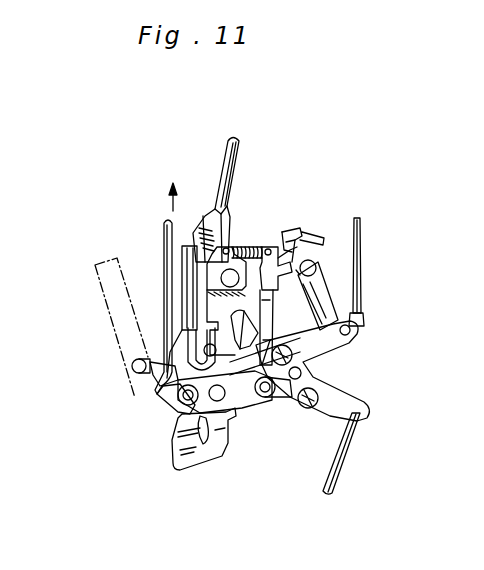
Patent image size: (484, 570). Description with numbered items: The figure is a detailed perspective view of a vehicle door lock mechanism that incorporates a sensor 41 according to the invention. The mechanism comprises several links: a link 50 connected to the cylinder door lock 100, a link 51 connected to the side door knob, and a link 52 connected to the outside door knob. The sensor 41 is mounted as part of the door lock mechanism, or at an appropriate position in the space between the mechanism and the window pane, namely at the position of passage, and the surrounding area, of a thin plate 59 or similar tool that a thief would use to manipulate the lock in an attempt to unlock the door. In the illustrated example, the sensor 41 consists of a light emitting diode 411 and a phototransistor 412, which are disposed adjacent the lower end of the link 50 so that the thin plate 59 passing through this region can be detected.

The cylinder door lock 100 is at (171, 182).
The link 50 is at (163, 232).
The link 52 is at (236, 175).
The link 51 is at (362, 258).
The thin plate 59 is at (96, 292).
The light emitting diode 411 is at (133, 382).
The phototransistor 412 is at (158, 386).
The sensor 41 is at (160, 500).